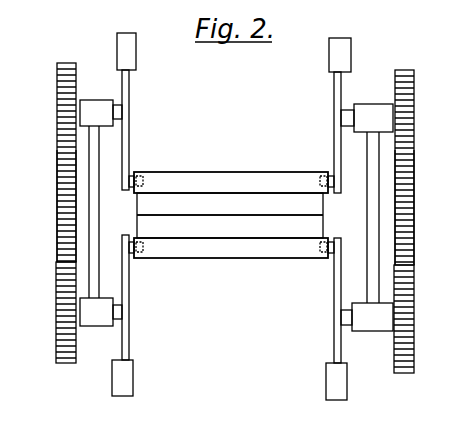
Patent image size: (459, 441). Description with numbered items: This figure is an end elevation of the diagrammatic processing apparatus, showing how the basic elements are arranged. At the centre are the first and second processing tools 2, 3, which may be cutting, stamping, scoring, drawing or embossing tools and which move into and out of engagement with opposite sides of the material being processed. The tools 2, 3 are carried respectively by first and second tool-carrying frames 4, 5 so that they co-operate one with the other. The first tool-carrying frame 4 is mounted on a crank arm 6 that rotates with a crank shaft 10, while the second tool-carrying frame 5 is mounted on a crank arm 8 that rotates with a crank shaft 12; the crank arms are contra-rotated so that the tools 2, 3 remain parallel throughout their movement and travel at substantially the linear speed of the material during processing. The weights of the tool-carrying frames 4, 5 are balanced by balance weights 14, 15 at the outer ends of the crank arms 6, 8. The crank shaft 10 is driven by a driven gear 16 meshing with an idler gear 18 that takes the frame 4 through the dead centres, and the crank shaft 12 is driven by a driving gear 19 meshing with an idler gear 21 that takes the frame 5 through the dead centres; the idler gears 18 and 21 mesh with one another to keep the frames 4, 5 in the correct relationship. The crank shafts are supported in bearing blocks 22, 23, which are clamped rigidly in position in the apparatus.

The first processing tool 2 is at (197, 200).
The second processing tool 3 is at (236, 232).
The first tool-carrying frame 4 is at (243, 176).
The second tool-carrying frame 5 is at (258, 250).
The crank arm 6 is at (128, 89).
The crank arm 8 is at (124, 289).
The crank shaft 10 is at (118, 115).
The crank shaft 12 is at (115, 315).
The balance weight 14 is at (130, 46).
The balance weight 15 is at (128, 384).
The driven gear 16 is at (60, 86).
The idler gear 18 is at (62, 178).
The driving gear 19 is at (62, 301).
The idler gear 21 is at (62, 232).
The bearing block 22 is at (97, 240).
The bearing block 23 is at (372, 214).